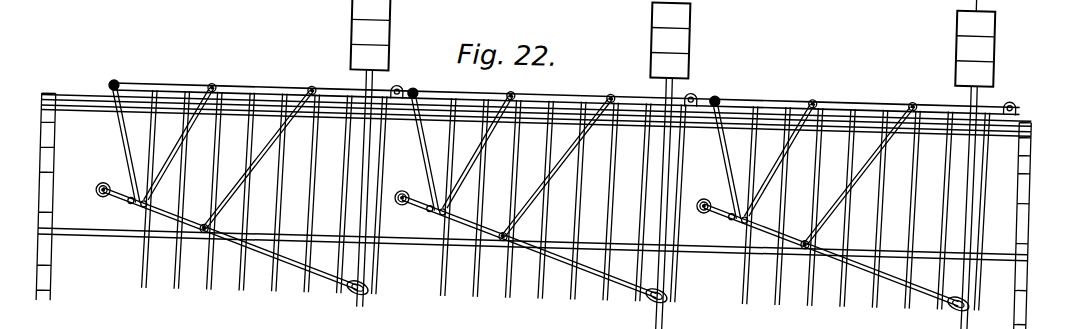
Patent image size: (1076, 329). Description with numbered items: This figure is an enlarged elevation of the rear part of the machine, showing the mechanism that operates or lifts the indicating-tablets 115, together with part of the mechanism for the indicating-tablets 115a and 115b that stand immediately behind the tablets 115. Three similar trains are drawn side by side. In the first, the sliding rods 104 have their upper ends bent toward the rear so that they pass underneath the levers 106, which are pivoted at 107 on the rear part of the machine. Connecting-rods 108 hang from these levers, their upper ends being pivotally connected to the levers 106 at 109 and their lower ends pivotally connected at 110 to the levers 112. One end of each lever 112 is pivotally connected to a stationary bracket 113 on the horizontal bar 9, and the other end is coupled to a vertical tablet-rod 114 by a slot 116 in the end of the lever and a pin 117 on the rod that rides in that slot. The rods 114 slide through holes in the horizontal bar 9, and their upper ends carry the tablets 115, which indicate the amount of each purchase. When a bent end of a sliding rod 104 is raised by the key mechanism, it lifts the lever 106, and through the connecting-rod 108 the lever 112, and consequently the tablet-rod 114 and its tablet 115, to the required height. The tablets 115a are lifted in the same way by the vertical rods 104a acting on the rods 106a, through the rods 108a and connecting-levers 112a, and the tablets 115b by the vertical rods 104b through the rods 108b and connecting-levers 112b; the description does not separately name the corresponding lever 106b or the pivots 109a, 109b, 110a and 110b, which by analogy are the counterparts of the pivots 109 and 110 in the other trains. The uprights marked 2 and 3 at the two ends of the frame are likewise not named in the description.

The right end post 2 is at (1027, 96).
The left end post 3 is at (49, 102).
The horizontal bar 9 is at (72, 238).
The sliding rods 104 is at (555, 199).
The vertical rods 104a is at (248, 218).
The vertical rods 104b is at (783, 262).
The levers 106 is at (567, 84).
The rods 106a is at (277, 83).
The top rail section 106b is at (174, 83).
The pivot 107 is at (398, 78).
The connecting-rods 108 is at (496, 165).
The rods 108a is at (485, 152).
The rods 108b is at (121, 118).
The pivotal connection 109 is at (519, 77).
The pivot pin 109a is at (220, 76).
The pivot pin 109b is at (118, 74).
The pivotal connection 110 is at (440, 212).
The lower pivot 110a is at (808, 233).
The lower pivot 110b is at (735, 252).
The levers 112 is at (530, 258).
The connecting-levers 112a is at (905, 273).
The connecting-levers 112b is at (452, 258).
The stationary bracket 113 is at (102, 186).
The tablet-rods 114 is at (376, 72).
The indicating-tablets 115 is at (674, 164).
The indicating-tablets 115a is at (1005, 26).
The indicating-tablets 115b is at (478, 282).
The slot 116 is at (373, 286).
The pin 117 is at (375, 280).